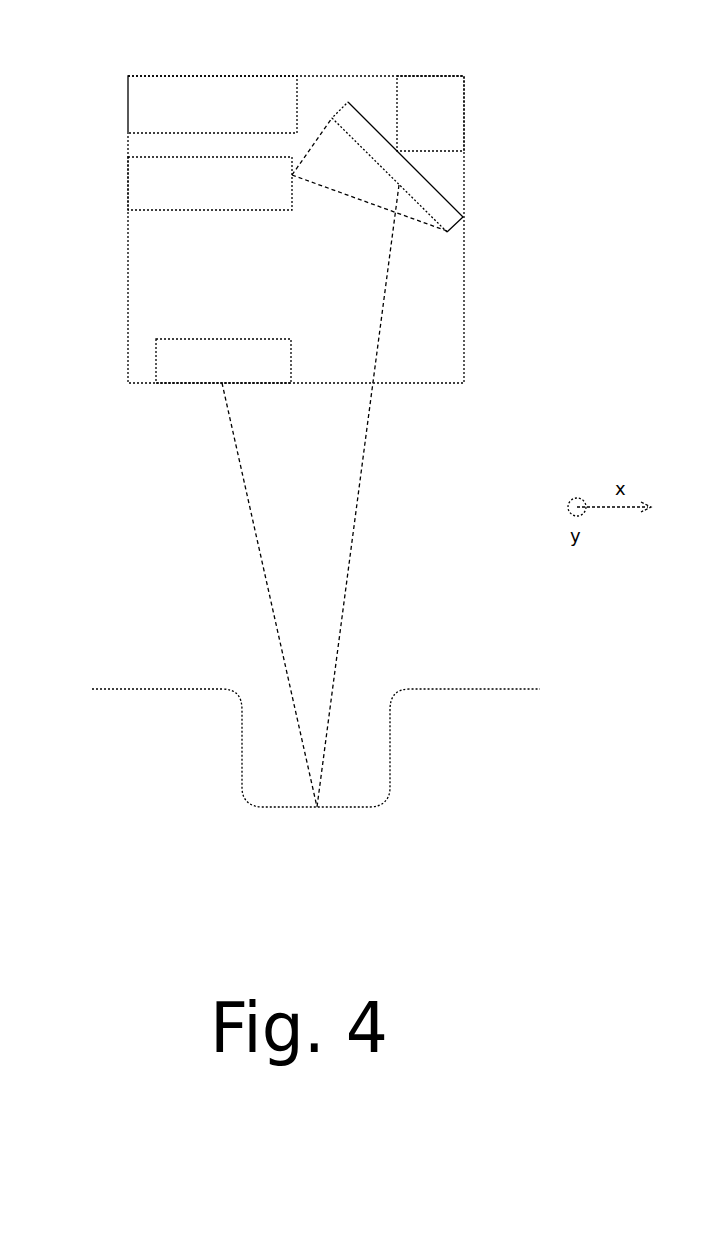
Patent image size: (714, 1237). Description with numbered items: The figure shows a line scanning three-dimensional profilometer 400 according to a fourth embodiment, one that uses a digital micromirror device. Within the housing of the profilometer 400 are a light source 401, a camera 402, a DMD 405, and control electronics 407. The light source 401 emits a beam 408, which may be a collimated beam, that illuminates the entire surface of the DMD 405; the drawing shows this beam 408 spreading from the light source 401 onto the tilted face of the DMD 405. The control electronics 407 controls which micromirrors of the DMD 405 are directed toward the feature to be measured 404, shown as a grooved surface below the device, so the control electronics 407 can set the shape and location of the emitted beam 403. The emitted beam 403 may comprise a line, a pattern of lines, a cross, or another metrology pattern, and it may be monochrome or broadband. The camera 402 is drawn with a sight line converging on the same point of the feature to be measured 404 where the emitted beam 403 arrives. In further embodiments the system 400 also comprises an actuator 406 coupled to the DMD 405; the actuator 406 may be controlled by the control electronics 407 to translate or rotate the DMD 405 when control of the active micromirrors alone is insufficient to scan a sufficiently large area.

The profilometer 400 is at (297, 229).
The light source 401 is at (128, 183).
The camera 402 is at (222, 339).
The emitted beam 403 is at (361, 478).
The feature to be measured 404 is at (226, 686).
The DMD 405 is at (455, 226).
The actuator 406 is at (464, 113).
The control electronics 407 is at (234, 124).
The beam 408 is at (347, 196).